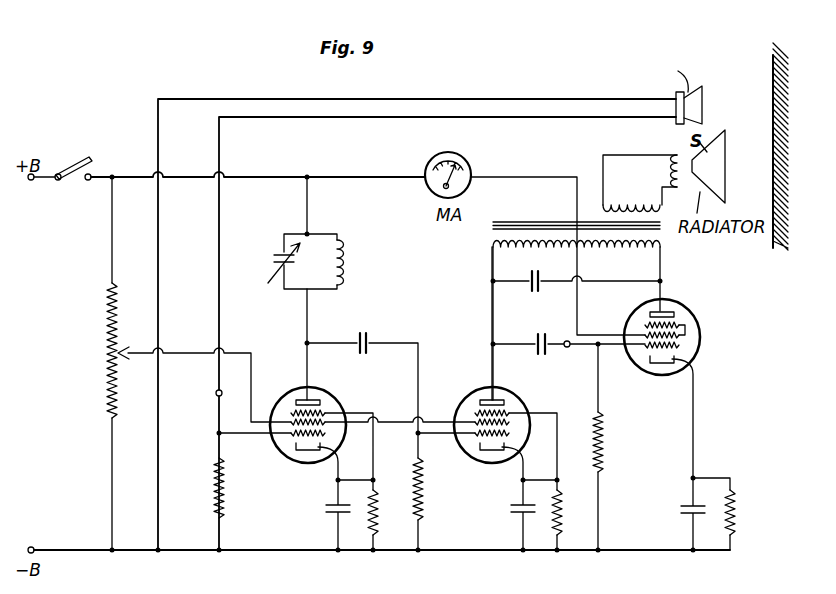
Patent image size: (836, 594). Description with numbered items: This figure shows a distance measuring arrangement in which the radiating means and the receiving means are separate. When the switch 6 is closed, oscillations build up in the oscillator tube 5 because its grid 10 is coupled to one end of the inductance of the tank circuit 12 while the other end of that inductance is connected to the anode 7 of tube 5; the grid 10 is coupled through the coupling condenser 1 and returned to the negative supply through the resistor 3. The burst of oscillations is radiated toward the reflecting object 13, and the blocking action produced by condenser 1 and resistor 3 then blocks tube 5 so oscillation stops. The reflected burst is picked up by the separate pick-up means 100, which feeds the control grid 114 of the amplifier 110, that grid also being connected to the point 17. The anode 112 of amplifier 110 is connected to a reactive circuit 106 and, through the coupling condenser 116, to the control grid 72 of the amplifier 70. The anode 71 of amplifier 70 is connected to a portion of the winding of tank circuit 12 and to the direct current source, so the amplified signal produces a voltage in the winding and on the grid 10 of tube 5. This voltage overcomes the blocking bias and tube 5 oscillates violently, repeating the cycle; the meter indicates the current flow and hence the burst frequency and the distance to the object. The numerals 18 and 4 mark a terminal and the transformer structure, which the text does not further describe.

The switch 6 is at (81, 165).
The reactive circuit 106 is at (313, 248).
The coupling condenser 116 is at (370, 341).
The amplifier 110 is at (314, 426).
The anode 112 is at (326, 401).
The control grid 114 is at (292, 438).
The connection point 17 is at (216, 393).
The amplifier 70 is at (480, 424).
The anode 71 is at (486, 396).
The control grid 72 is at (478, 441).
The connection terminal 18 is at (567, 348).
The coupling condenser 1 is at (538, 340).
The tank circuit 12 is at (576, 274).
The transformer 4 is at (552, 224).
The resistor 3 is at (602, 446).
The electron discharge device 5 is at (672, 339).
The plate 7 is at (690, 316).
The grid 10 is at (648, 350).
The pick-up means 100 is at (668, 95).
The object 13 is at (770, 72).